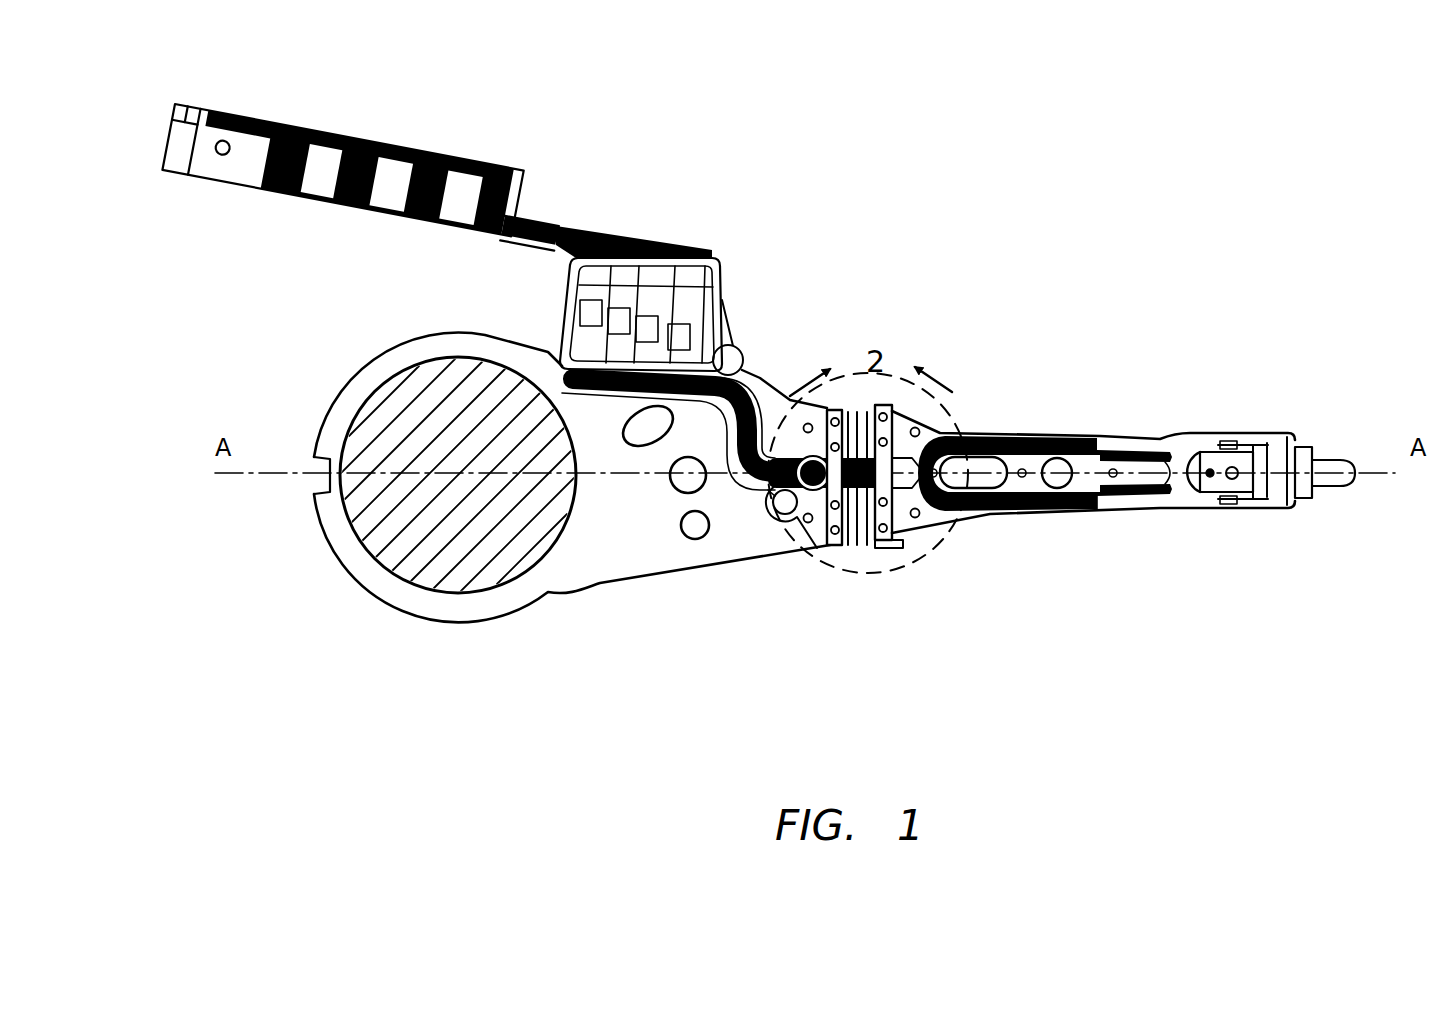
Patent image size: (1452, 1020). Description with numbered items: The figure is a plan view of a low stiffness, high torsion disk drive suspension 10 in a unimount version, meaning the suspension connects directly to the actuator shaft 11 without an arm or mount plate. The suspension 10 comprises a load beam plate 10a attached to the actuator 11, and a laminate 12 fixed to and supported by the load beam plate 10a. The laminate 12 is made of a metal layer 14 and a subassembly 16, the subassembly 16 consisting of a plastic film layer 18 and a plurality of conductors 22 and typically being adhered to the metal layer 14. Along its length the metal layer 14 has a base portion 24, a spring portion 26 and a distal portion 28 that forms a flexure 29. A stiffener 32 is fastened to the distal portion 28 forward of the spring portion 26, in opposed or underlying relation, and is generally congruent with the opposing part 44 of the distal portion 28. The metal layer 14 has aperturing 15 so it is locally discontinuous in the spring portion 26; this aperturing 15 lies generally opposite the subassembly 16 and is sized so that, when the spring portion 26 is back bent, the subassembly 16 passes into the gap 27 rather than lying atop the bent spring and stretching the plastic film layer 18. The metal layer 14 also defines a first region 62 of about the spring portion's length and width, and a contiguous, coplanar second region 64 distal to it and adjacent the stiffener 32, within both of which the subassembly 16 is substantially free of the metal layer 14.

The disk drive suspension 10 is at (150, 292).
The load beam plate 10a is at (667, 550).
The actuator shaft 11 is at (513, 557).
The laminate 12 is at (992, 517).
The metal layer 14 is at (963, 408).
The aperturing 15 is at (898, 408).
The subassembly 16 is at (740, 483).
The plastic film layer 18 is at (1003, 432).
The conductors 22 is at (1048, 513).
The base portion 24 is at (790, 396).
The spring portion 26 is at (858, 410).
The gap 27 is at (851, 547).
The distal portion 28 is at (1273, 512).
The flexure 29 is at (1253, 446).
The stiffener 32 is at (1142, 512).
The opposing part 44 is at (1082, 512).
The first region 62 is at (873, 548).
The second region 64 is at (927, 412).